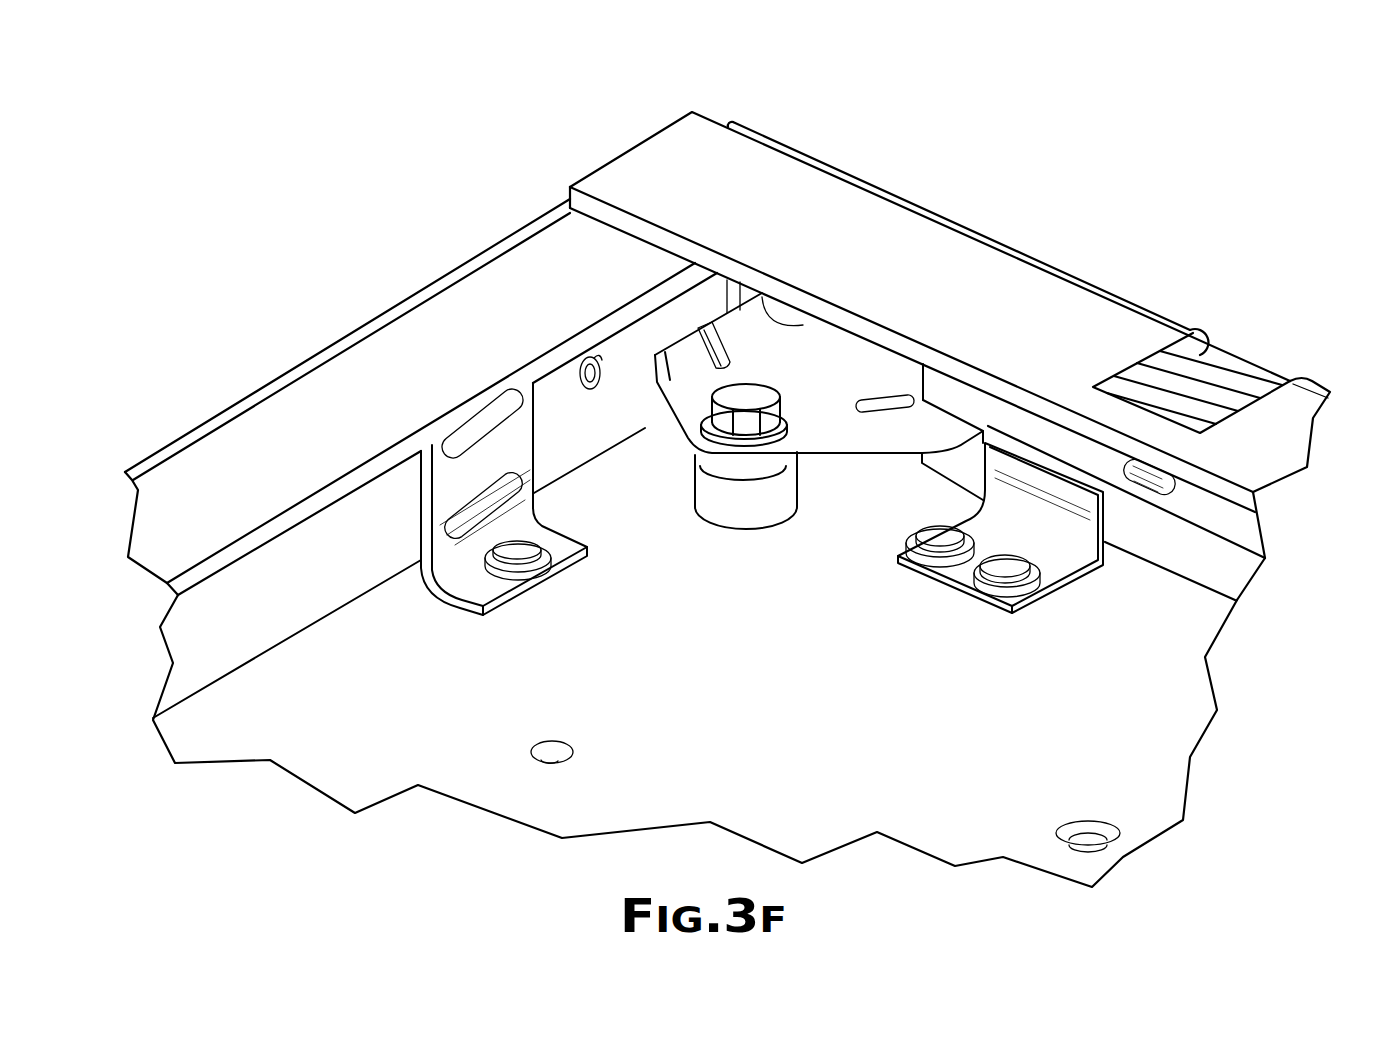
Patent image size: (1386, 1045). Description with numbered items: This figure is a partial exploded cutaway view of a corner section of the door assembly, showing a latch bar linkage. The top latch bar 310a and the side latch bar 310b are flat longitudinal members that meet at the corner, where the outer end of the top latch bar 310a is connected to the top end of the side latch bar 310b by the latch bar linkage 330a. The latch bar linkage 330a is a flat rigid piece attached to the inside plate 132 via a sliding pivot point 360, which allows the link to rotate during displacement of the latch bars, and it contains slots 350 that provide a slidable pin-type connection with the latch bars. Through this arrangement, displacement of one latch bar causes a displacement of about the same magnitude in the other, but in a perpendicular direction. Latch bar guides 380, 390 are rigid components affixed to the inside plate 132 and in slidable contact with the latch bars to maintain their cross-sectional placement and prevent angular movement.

The inside plate 132 is at (725, 708).
The top latch bar 310a is at (270, 607).
The side latch bar 310b is at (1160, 563).
The latch bar linkage 330a is at (860, 386).
The slot 350 is at (912, 408).
The sliding pivot point 360 is at (746, 407).
The latch bar guide 380 is at (448, 555).
The latch bar guide 390 is at (965, 572).